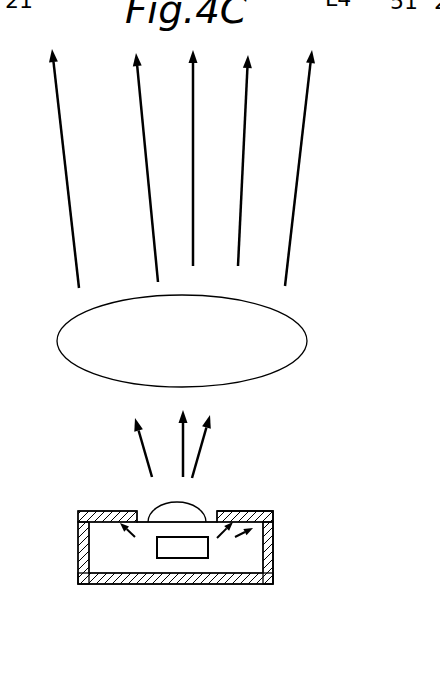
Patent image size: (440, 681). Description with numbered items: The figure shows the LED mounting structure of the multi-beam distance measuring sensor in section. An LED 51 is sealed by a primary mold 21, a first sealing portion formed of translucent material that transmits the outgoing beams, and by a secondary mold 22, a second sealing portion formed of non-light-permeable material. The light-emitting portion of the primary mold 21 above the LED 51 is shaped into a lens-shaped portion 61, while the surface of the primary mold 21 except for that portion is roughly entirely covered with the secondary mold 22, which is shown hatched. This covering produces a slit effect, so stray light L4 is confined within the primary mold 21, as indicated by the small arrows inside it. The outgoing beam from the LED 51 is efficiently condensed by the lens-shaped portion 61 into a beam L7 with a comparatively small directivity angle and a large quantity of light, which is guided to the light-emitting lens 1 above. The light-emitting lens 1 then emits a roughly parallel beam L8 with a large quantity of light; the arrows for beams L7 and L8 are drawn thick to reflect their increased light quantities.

The light-emitting lens 1 is at (296, 338).
The primary mold 21 is at (120, 565).
The secondary mold 22 is at (273, 562).
The LED 51 is at (183, 547).
The lens-shaped portion 61 is at (205, 517).
The stray light L4 is at (244, 533).
The beam L7 is at (201, 448).
The beam L8 is at (72, 243).